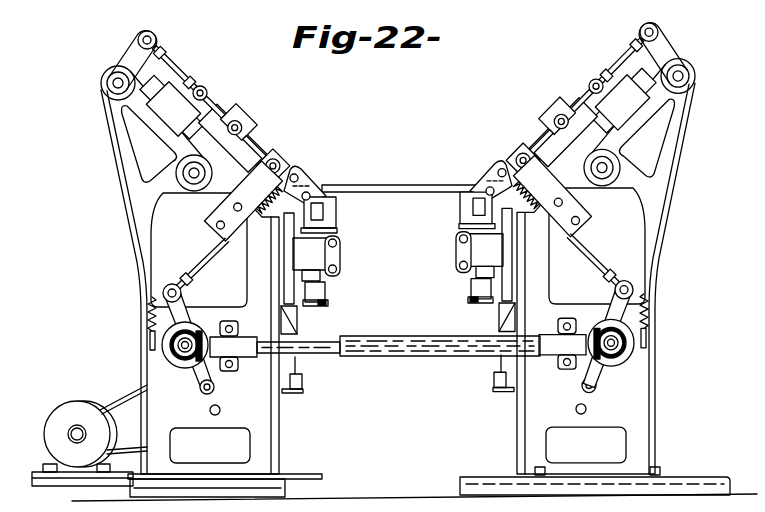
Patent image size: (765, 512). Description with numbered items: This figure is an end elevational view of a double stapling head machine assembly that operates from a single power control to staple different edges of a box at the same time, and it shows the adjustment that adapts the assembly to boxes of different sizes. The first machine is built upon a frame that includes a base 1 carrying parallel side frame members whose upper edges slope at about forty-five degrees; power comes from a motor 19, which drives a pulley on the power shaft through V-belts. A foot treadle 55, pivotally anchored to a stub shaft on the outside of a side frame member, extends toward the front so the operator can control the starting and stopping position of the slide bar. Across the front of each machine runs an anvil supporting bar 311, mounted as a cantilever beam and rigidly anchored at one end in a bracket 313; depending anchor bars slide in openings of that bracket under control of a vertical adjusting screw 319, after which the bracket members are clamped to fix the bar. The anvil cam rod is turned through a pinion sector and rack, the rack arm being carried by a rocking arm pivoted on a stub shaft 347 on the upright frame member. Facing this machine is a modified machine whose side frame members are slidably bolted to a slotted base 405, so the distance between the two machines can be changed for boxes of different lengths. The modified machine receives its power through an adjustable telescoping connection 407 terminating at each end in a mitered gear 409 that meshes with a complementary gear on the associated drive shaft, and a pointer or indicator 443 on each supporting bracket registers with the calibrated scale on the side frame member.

The base 1 is at (250, 490).
The motor 19 is at (62, 416).
The foot treadle 55 is at (305, 474).
The anvil supporting bar 311 is at (325, 210).
The bracket 313 is at (321, 258).
The vertical adjusting screw 319 is at (320, 292).
The stub shaft 347 is at (203, 396).
The slotted base 405 is at (692, 476).
The adjustable telescoping connection 407 is at (410, 357).
The mitered gear 409 is at (198, 366).
The pointer or indicator 443 is at (167, 353).